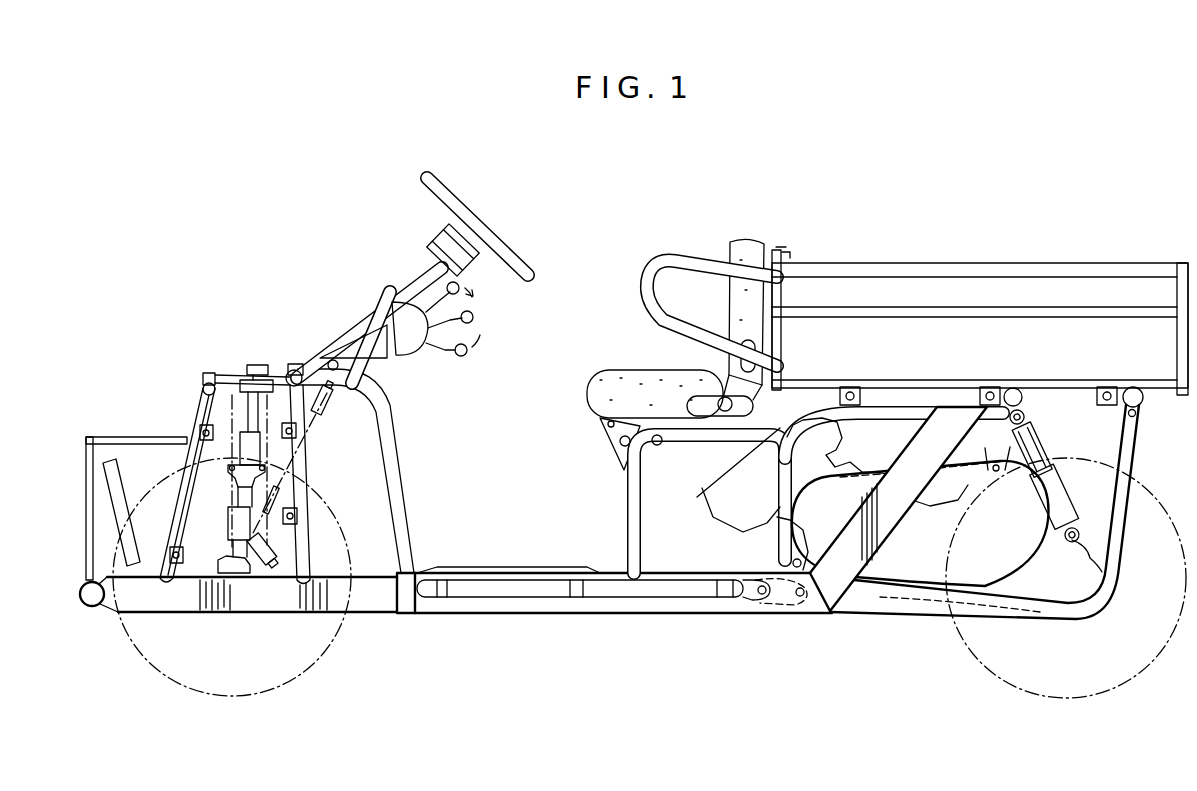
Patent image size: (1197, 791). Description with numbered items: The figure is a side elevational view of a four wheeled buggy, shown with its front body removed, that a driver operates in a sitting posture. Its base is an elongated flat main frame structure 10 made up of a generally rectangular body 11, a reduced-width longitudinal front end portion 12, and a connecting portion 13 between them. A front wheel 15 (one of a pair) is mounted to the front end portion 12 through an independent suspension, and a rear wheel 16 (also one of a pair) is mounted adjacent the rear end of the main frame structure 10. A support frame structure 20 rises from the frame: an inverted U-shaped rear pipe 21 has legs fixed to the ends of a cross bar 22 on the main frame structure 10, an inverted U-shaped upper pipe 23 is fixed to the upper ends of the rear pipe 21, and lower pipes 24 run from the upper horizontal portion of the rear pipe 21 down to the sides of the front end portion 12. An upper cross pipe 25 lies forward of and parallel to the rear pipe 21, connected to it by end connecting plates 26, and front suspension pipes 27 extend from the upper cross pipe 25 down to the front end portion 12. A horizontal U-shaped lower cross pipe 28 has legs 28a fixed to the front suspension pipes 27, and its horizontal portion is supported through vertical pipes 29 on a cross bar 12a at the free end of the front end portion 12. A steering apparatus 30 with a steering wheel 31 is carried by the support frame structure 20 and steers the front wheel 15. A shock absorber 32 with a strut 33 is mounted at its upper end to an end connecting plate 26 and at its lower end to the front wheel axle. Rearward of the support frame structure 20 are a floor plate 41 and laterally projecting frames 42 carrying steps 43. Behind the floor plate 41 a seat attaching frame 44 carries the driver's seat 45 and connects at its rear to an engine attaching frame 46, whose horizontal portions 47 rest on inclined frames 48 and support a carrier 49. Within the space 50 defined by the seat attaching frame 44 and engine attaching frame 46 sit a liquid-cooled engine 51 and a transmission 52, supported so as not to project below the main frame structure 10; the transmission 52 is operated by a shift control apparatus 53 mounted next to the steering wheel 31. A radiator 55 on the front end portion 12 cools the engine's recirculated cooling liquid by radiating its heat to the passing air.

The main frame structure 10 is at (501, 617).
The body 11 is at (683, 615).
The front end portion 12 is at (226, 614).
The cross bar 12a is at (82, 606).
The connecting portion 13 is at (363, 615).
The front wheel 15 is at (293, 678).
The rear wheel 16 is at (990, 674).
The support frame structure 20 is at (322, 321).
The rear pipe 21 is at (397, 484).
The cross bar 22 is at (403, 615).
The upper pipe 23 is at (380, 313).
The lower pipe 24 is at (305, 470).
The upper cross pipe 25 is at (206, 385).
The end connecting plate 26 is at (232, 388).
The front suspension pipe 27 is at (193, 453).
The lower cross pipe 28 is at (137, 428).
The leg 28a is at (105, 441).
The vertical pipe 29 is at (86, 490).
The steering apparatus 30 is at (338, 411).
The steering wheel 31 is at (490, 234).
The shock absorber 32 is at (230, 513).
The strut 33 is at (250, 414).
The floor plate 41 is at (540, 567).
The frame 42 is at (571, 598).
The step 43 is at (680, 575).
The seat attaching frame 44 is at (625, 488).
The driver's seat 45 is at (633, 370).
The engine attaching frame 46 is at (813, 388).
The horizontal portion 47 is at (963, 393).
The inclined frame 48 is at (890, 535).
The carrier 49 is at (990, 262).
The space 50 is at (867, 432).
The liquid-cooled engine 51 is at (703, 490).
The transmission 52 is at (893, 584).
The shift control apparatus 53 is at (483, 312).
The radiator 55 is at (118, 484).